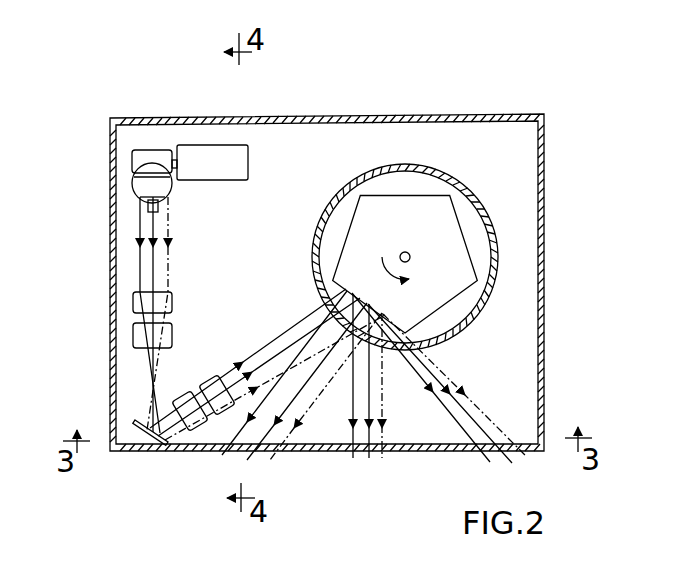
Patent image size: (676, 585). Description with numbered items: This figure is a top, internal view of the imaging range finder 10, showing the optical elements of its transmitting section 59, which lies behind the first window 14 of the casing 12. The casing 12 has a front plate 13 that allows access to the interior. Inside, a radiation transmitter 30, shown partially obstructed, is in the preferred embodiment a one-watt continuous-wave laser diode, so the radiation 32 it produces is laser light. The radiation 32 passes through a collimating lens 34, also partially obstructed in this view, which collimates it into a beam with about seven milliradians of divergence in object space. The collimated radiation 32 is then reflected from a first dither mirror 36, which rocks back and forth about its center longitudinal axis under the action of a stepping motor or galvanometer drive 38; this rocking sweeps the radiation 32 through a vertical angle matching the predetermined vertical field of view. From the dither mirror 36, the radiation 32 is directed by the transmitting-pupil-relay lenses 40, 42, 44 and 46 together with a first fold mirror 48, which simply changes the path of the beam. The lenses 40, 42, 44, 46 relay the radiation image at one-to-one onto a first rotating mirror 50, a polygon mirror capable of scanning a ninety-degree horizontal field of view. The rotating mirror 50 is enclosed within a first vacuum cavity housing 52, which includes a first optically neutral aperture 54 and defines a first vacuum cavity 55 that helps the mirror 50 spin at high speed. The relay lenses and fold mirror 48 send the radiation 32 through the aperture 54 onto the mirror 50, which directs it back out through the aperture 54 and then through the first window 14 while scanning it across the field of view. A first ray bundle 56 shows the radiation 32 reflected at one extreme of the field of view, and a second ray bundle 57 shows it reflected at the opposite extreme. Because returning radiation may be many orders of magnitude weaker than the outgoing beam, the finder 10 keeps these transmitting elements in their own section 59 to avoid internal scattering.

The imaging range finder 10 is at (507, 81).
The casing 12 is at (545, 363).
The front plate 13 is at (185, 452).
The first window 14 is at (411, 453).
The radiation transmitter 30 is at (152, 212).
The radiation 32 is at (167, 280).
The collimating lens 34 is at (135, 186).
The first dither mirror 36 is at (150, 150).
The stepping motor or galvanometer drive 38 is at (190, 152).
The transmitting-pupil-relay lens 40 is at (134, 300).
The transmitting-pupil-relay lens 42 is at (134, 335).
The transmitting-pupil-relay lens 44 is at (182, 393).
The transmitting-pupil-relay lens 46 is at (213, 377).
The first fold mirror 48 is at (140, 428).
The first rotating mirror 50 is at (452, 227).
The first vacuum cavity housing 52 is at (487, 293).
The first optically neutral aperture 54 is at (422, 350).
The first vacuum cavity 55 is at (415, 183).
The first ray bundle 56 is at (245, 455).
The second ray bundle 57 is at (440, 428).
The transmitting section 59 is at (336, 148).